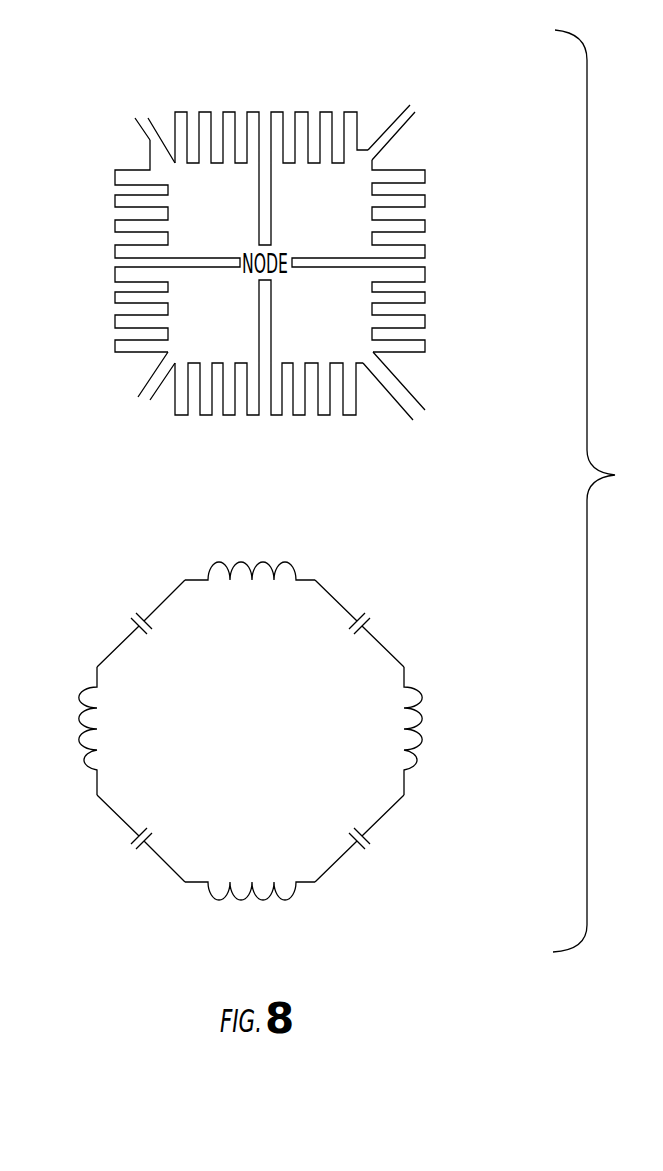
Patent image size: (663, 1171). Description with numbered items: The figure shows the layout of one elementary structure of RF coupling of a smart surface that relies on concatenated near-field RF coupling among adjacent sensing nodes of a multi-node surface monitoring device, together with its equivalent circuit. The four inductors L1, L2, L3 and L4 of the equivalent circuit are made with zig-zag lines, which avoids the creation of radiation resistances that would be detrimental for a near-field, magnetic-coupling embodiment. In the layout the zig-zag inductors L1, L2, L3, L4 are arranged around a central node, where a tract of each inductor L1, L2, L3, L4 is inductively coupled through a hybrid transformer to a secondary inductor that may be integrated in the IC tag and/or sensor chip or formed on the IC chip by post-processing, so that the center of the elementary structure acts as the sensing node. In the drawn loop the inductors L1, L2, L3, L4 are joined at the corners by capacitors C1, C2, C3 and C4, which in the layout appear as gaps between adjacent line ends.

The inductor L1 is at (105, 287).
The inductor L2 is at (243, 102).
The inductor L3 is at (439, 230).
The inductor L4 is at (322, 426).
The first capacitor C1 is at (141, 623).
The second capacitor (gap capacitor) C2 is at (138, 112).
The third capacitor (gap capacitor) C3 is at (413, 435).
The fourth capacitor (gap capacitor) C4 is at (136, 406).